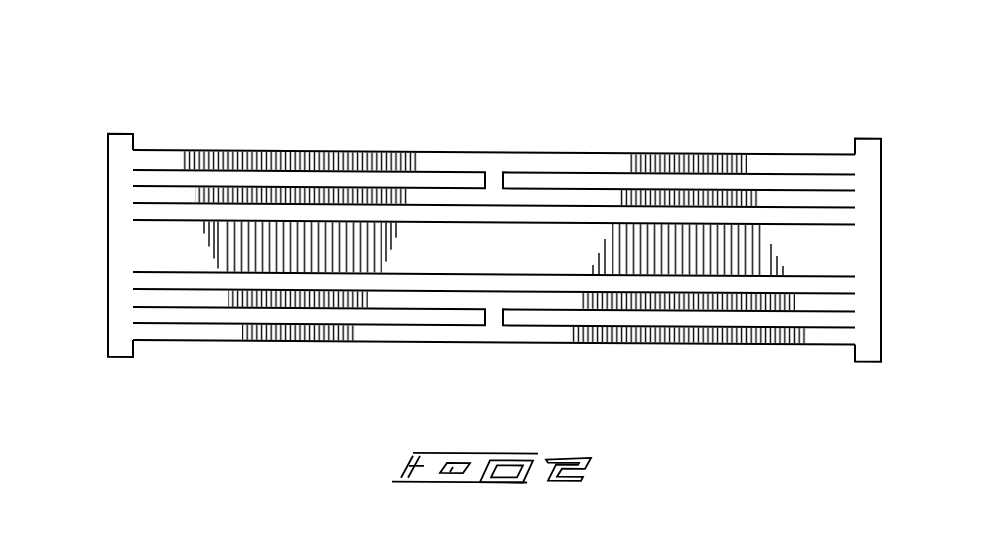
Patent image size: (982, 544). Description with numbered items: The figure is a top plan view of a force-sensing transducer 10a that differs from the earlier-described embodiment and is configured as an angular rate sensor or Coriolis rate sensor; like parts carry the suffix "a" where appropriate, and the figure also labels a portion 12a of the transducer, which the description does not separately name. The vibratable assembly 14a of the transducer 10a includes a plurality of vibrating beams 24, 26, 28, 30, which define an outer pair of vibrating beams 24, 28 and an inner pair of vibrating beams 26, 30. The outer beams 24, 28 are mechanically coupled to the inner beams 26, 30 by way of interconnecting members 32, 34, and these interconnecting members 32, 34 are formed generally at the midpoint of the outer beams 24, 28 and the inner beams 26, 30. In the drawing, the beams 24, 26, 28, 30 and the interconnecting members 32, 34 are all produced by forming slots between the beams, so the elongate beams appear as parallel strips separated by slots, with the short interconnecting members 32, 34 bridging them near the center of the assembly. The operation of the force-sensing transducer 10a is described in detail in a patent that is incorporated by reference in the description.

The force-sensing transducer 10a is at (190, 74).
The first electrode 12a is at (152, 243).
The vibratable assembly 14a is at (371, 123).
The vibrating beam 24 is at (597, 159).
The vibrating beam 26 is at (553, 196).
The vibrating beam 28 is at (596, 330).
The vibrating beam 30 is at (553, 298).
The interconnecting member 32 is at (492, 178).
The interconnecting member 34 is at (493, 316).